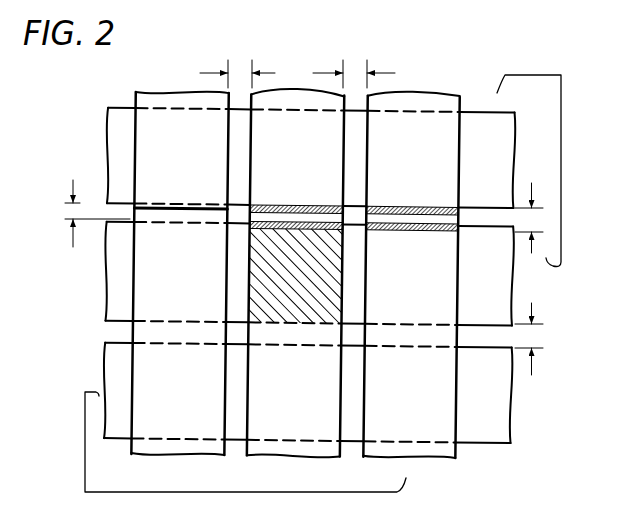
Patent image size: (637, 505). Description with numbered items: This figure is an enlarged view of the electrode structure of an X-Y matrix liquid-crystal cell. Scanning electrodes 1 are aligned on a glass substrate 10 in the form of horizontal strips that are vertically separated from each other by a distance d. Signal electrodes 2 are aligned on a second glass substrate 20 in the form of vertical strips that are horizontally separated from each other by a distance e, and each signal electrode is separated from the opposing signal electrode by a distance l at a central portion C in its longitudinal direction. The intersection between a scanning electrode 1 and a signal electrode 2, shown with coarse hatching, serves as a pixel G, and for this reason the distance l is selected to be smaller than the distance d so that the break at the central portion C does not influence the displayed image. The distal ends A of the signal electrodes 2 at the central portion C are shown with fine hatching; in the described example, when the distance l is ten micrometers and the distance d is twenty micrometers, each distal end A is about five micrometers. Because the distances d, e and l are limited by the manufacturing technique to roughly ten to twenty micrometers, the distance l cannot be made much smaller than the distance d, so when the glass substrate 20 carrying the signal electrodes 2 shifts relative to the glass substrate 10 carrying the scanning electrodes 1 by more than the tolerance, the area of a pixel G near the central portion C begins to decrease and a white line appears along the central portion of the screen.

The glass substrate 10 is at (545, 95).
The glass substrate 20 is at (105, 478).
The scanning electrodes 1 is at (503, 160).
The signal electrodes 2 is at (200, 452).
The distal ends A is at (297, 205).
The central portion C is at (140, 213).
The pixel G is at (299, 275).
The distance e is at (297, 74).
The distance d is at (529, 279).
The distance l is at (70, 212).